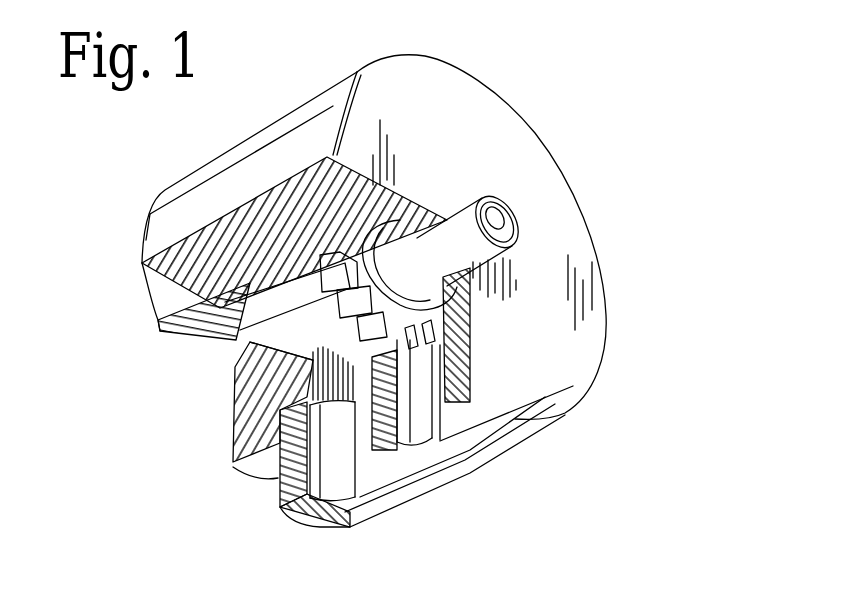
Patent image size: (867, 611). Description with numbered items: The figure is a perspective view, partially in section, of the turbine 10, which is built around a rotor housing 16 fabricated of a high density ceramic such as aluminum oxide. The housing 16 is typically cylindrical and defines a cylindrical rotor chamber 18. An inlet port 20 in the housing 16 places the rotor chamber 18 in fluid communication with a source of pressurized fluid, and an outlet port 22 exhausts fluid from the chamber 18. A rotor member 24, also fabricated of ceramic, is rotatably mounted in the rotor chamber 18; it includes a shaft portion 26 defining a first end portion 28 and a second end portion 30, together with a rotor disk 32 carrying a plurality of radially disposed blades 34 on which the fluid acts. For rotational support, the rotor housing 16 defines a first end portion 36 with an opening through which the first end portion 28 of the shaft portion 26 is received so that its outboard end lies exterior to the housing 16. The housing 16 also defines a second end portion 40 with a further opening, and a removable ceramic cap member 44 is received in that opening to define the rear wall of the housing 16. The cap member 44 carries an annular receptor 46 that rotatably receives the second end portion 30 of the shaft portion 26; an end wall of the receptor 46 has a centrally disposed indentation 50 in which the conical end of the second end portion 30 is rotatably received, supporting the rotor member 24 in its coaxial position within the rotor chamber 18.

The turbine 10 is at (655, 135).
The rotor housing 16 is at (465, 105).
The rotor chamber 18 is at (313, 267).
The inlet port 20 is at (427, 432).
The outlet port 22 is at (340, 477).
The rotor member 24 is at (440, 343).
The shaft portion 26 is at (400, 210).
The first end portion 28 is at (463, 200).
The second end portion 30 is at (257, 410).
The rotor disk 32 is at (460, 380).
The blades 34 is at (337, 260).
The first end portion 36 is at (578, 206).
The second end portion 40 is at (150, 218).
The cap member 44 is at (175, 330).
The annular receptor 46 is at (215, 365).
The indentation 50 is at (237, 360).